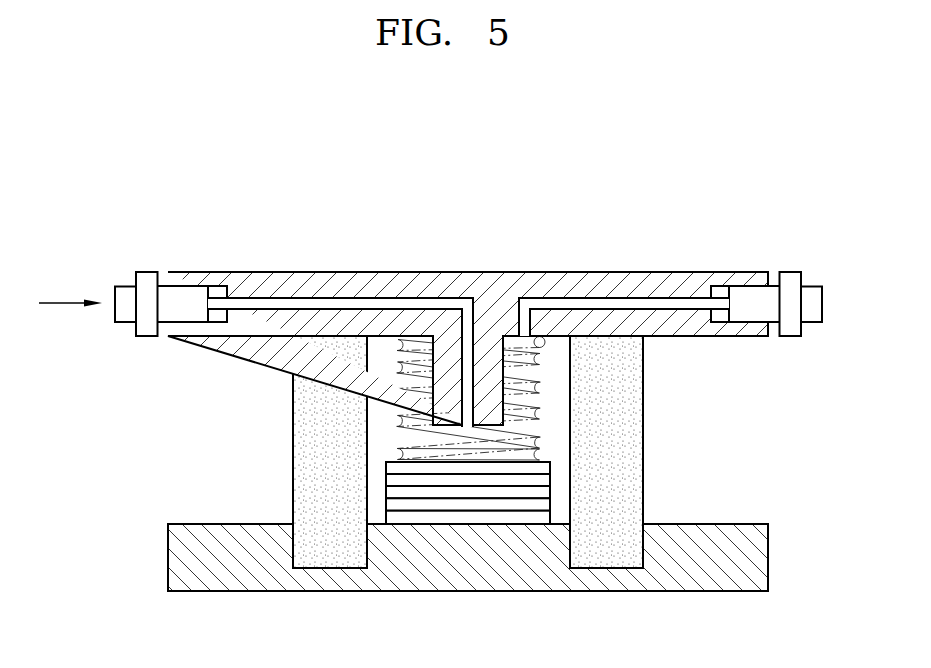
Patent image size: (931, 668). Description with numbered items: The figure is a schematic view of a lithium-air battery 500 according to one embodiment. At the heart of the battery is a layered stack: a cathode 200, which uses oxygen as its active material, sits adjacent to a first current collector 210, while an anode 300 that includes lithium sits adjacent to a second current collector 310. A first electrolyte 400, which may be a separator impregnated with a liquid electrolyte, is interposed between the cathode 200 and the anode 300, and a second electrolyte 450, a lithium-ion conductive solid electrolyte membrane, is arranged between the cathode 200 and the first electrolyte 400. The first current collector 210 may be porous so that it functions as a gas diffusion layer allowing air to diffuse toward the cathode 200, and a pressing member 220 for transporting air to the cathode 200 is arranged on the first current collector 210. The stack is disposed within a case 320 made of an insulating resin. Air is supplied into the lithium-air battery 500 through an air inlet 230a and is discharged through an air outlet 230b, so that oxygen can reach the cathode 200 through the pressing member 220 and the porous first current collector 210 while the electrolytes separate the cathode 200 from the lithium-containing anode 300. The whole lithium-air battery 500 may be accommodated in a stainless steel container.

The lithium-air battery 500 is at (448, 279).
The air inlet 230a is at (127, 315).
The air outlet 230b is at (812, 315).
The pressing member 220 is at (543, 388).
The first current collector 210 is at (550, 463).
The cathode 200 is at (550, 478).
The second electrolyte 450 is at (550, 493).
The first electrolyte 400 is at (550, 507).
The anode 300 is at (545, 520).
The case 320 is at (305, 437).
The second current collector 310 is at (178, 560).